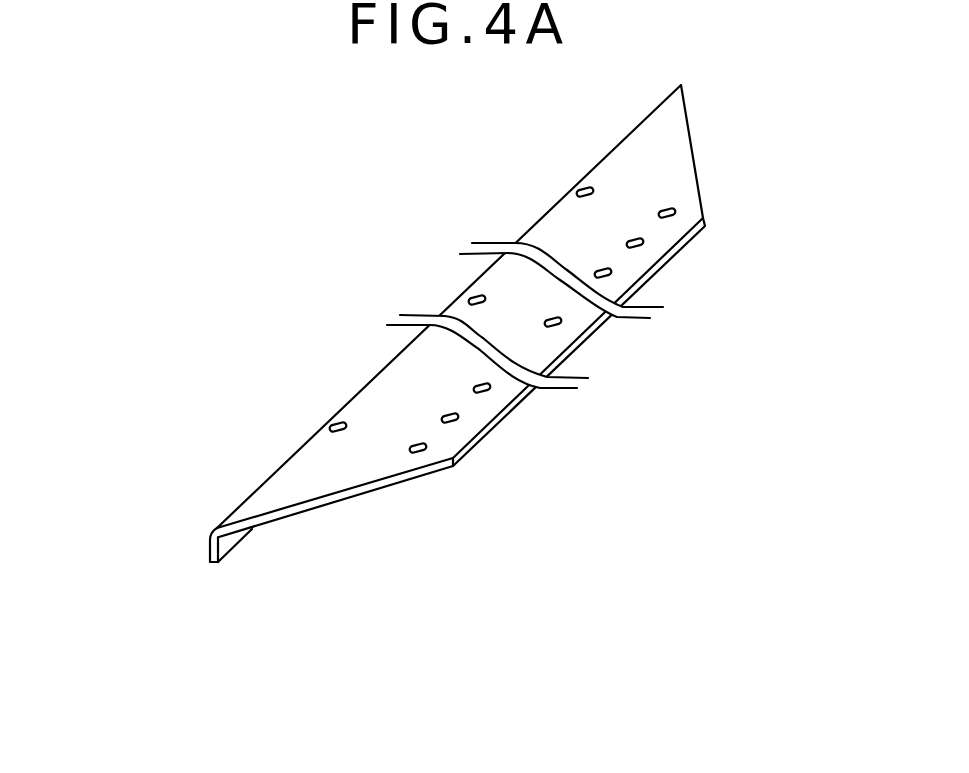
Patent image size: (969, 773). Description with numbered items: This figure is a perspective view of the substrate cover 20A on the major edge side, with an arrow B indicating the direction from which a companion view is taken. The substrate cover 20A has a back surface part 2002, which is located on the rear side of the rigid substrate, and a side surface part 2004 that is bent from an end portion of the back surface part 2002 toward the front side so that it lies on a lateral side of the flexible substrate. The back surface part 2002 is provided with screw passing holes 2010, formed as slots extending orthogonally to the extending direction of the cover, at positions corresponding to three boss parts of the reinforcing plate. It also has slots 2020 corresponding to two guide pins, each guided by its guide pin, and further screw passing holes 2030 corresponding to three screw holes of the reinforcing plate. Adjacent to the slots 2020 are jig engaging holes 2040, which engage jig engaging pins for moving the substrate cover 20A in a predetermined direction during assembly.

The substrate cover 20A is at (305, 220).
The back surface part 2002 is at (277, 482).
The side surface part 2004 is at (208, 550).
The screw passing holes 2010 is at (580, 190).
The slots 2020 is at (610, 272).
The screw passing holes 2030 is at (674, 211).
The jig engaging holes 2040 is at (642, 242).
The arrow B is at (337, 540).